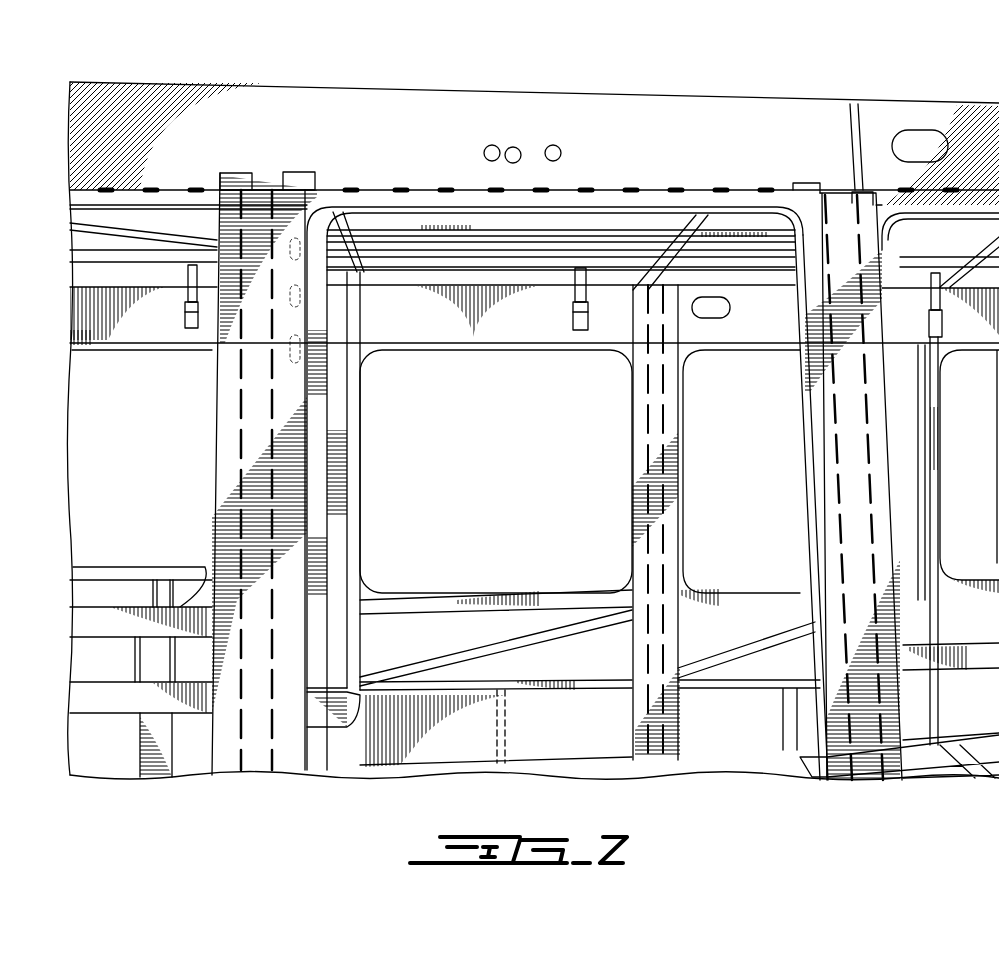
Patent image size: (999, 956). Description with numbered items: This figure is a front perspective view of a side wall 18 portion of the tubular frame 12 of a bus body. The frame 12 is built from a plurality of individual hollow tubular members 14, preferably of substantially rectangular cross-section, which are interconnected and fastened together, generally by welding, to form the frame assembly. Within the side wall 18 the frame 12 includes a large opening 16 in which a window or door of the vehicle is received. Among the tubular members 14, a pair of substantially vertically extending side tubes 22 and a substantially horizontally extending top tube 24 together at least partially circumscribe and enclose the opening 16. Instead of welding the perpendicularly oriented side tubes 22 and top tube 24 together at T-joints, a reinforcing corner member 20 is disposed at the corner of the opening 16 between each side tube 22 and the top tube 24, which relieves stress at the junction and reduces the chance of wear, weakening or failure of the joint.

The frame 12 is at (868, 90).
The hollow tubular members 14 is at (225, 480).
The opening 16 is at (810, 452).
The side wall 18 is at (360, 133).
The reinforcing corner member 20 is at (301, 180).
The side tubes 22 is at (290, 516).
The top tube 24 is at (497, 197).